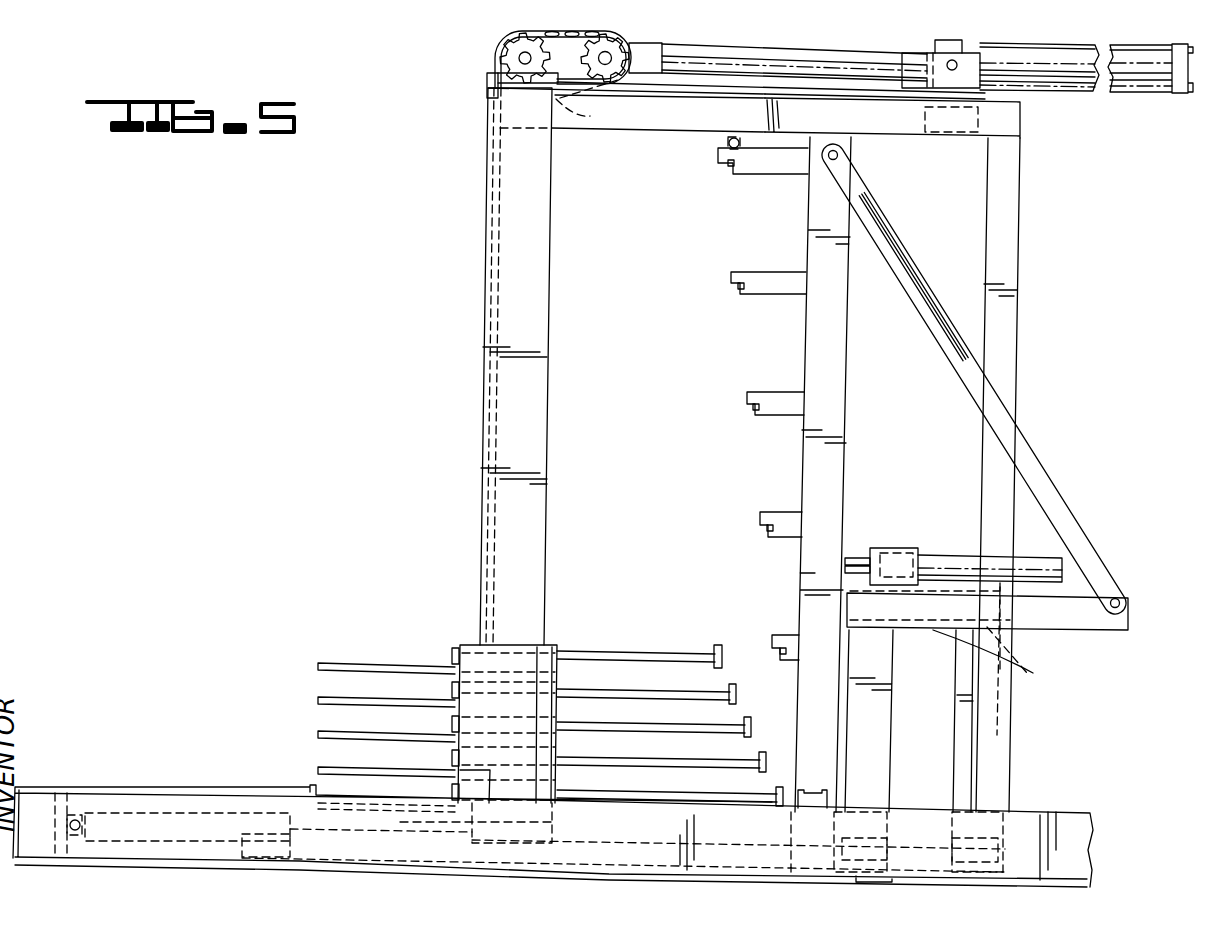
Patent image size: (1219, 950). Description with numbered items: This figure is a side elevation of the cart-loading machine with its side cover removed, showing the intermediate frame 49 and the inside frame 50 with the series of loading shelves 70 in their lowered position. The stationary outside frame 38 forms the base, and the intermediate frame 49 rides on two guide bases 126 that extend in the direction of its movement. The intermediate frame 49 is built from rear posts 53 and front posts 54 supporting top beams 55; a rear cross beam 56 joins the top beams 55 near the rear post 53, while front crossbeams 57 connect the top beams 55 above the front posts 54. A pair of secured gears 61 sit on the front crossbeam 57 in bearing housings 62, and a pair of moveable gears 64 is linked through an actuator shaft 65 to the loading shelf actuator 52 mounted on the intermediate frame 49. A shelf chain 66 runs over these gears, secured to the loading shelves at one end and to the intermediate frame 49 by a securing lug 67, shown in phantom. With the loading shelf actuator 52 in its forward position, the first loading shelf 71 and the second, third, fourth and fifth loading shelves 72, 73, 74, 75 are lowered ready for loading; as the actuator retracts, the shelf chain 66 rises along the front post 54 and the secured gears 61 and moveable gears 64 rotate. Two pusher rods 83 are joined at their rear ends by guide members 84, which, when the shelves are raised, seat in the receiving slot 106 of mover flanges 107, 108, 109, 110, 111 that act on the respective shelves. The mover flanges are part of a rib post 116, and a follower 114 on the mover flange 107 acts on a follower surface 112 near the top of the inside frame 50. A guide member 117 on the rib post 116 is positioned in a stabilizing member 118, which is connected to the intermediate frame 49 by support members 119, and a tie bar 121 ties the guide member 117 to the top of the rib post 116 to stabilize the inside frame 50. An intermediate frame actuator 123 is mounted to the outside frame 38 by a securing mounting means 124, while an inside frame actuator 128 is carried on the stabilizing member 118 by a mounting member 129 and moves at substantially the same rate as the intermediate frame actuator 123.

The outside frame 38 is at (29, 782).
The intermediate frame 49 is at (1030, 261).
The inside frame 50 is at (862, 419).
The loading shelf actuator 52 is at (1078, 57).
The rear posts 53 is at (1012, 355).
The front posts 54 is at (540, 408).
The top beams 55 is at (1010, 127).
The rear cross beam 56 is at (935, 132).
The front crossbeams 57 is at (487, 88).
The secured gears 61 is at (497, 50).
The bearing housings 62 is at (522, 50).
The moveable gears 64 is at (612, 58).
The actuator shaft 65 is at (830, 60).
The shelf chain 66 is at (585, 32).
The securing lug 67 is at (591, 105).
The series of loading shelves 70 is at (404, 657).
The first loading shelf 71 is at (332, 663).
The second loading shelf 72 is at (334, 697).
The third loading shelf 73 is at (333, 731).
The fourth loading shelf 74 is at (333, 767).
The fifth loading shelf 75 is at (338, 803).
The pusher rods 83 is at (647, 661).
The guide members 84 is at (718, 645).
The receiving slot 106 is at (730, 172).
The mover flange 107 is at (787, 163).
The mover flange 108 is at (731, 280).
The mover flange 109 is at (770, 392).
The mover flange 110 is at (778, 512).
The mover flange 111 is at (792, 636).
The follower surface 112 is at (618, 135).
The follower 114 is at (727, 144).
The rib post 116 is at (835, 483).
The guide member 117 is at (1065, 613).
The stabilizing member 118 is at (970, 639).
The support members 119 is at (875, 785).
The tie bar 121 is at (927, 287).
The intermediate frame actuator 123 is at (138, 825).
The securing mounting means 124 is at (77, 813).
The guide bases 126 is at (565, 841).
The inside frame actuator 128 is at (950, 556).
The mounting member 129 is at (898, 535).